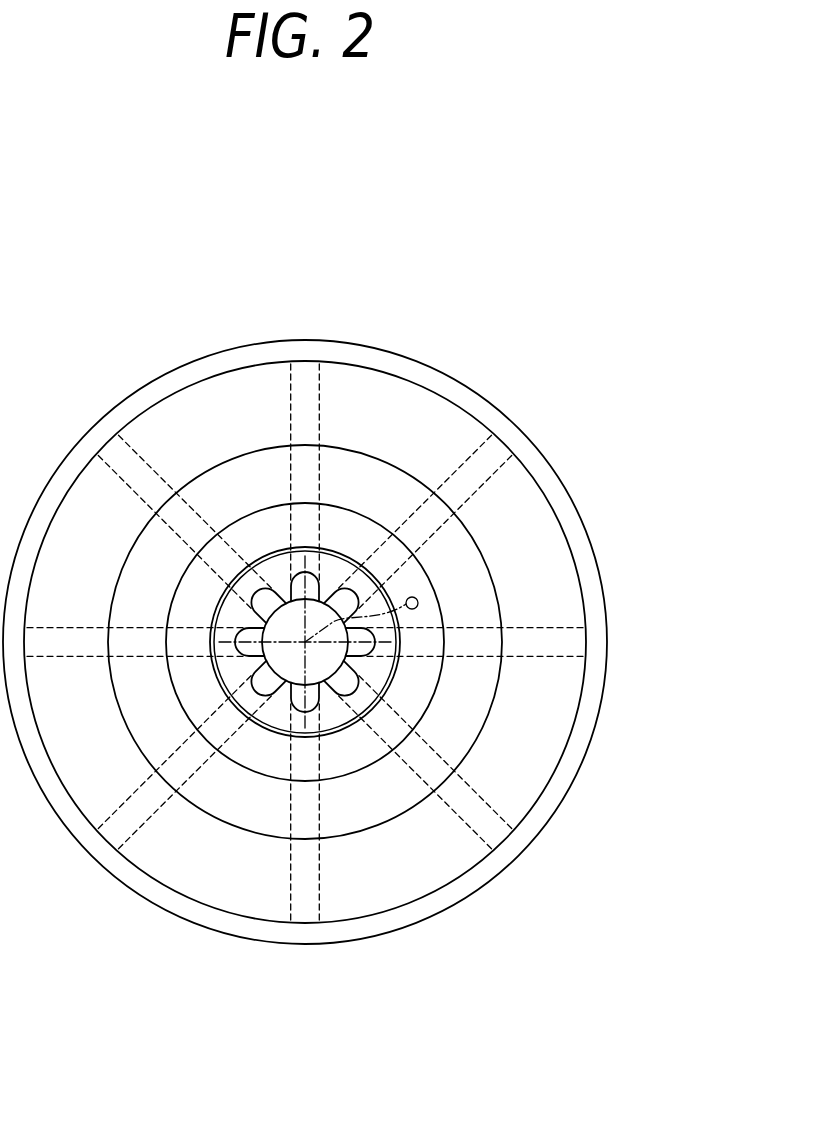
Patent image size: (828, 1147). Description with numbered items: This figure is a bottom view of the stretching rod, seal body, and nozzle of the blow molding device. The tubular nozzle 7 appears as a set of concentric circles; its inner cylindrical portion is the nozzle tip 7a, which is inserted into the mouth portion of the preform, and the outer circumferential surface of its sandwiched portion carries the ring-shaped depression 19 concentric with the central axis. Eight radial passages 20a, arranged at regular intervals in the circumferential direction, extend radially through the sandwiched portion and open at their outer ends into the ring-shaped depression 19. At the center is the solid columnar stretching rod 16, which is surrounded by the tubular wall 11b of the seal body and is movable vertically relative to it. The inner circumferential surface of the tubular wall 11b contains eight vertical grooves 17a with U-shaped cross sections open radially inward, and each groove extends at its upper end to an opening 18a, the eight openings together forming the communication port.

The nozzle 7 is at (539, 452).
The nozzle tip 7a is at (171, 688).
The tubular wall 11b is at (273, 731).
The stretching rod 16 is at (334, 671).
The vertical groove 17a is at (359, 657).
The opening 18a is at (398, 645).
The ring-shaped depression 19 is at (600, 646).
The radial passage 20a is at (533, 628).